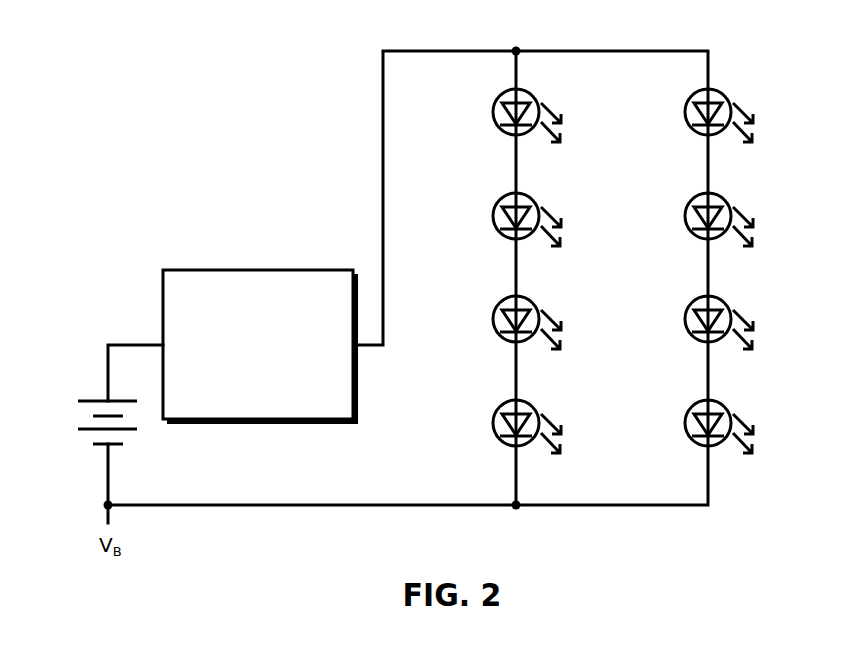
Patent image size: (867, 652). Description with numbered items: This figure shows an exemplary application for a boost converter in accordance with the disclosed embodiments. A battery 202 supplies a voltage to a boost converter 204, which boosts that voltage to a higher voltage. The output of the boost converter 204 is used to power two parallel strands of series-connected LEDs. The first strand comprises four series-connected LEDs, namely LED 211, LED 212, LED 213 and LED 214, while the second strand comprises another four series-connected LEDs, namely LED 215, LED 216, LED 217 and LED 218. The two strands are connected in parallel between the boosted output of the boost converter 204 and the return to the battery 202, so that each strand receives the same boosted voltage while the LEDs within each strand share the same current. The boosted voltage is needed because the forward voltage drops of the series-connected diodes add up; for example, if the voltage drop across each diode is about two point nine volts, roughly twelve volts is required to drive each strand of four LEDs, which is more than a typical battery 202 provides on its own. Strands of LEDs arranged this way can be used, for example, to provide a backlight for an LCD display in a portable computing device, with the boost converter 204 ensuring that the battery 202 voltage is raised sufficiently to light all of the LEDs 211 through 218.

The battery 202 is at (84, 422).
The boost converter 204 is at (260, 347).
The LED 211 is at (508, 115).
The LED 212 is at (508, 219).
The LED 213 is at (508, 322).
The LED 214 is at (508, 426).
The LED 215 is at (700, 115).
The LED 216 is at (700, 219).
The LED 217 is at (700, 322).
The LED 218 is at (700, 426).